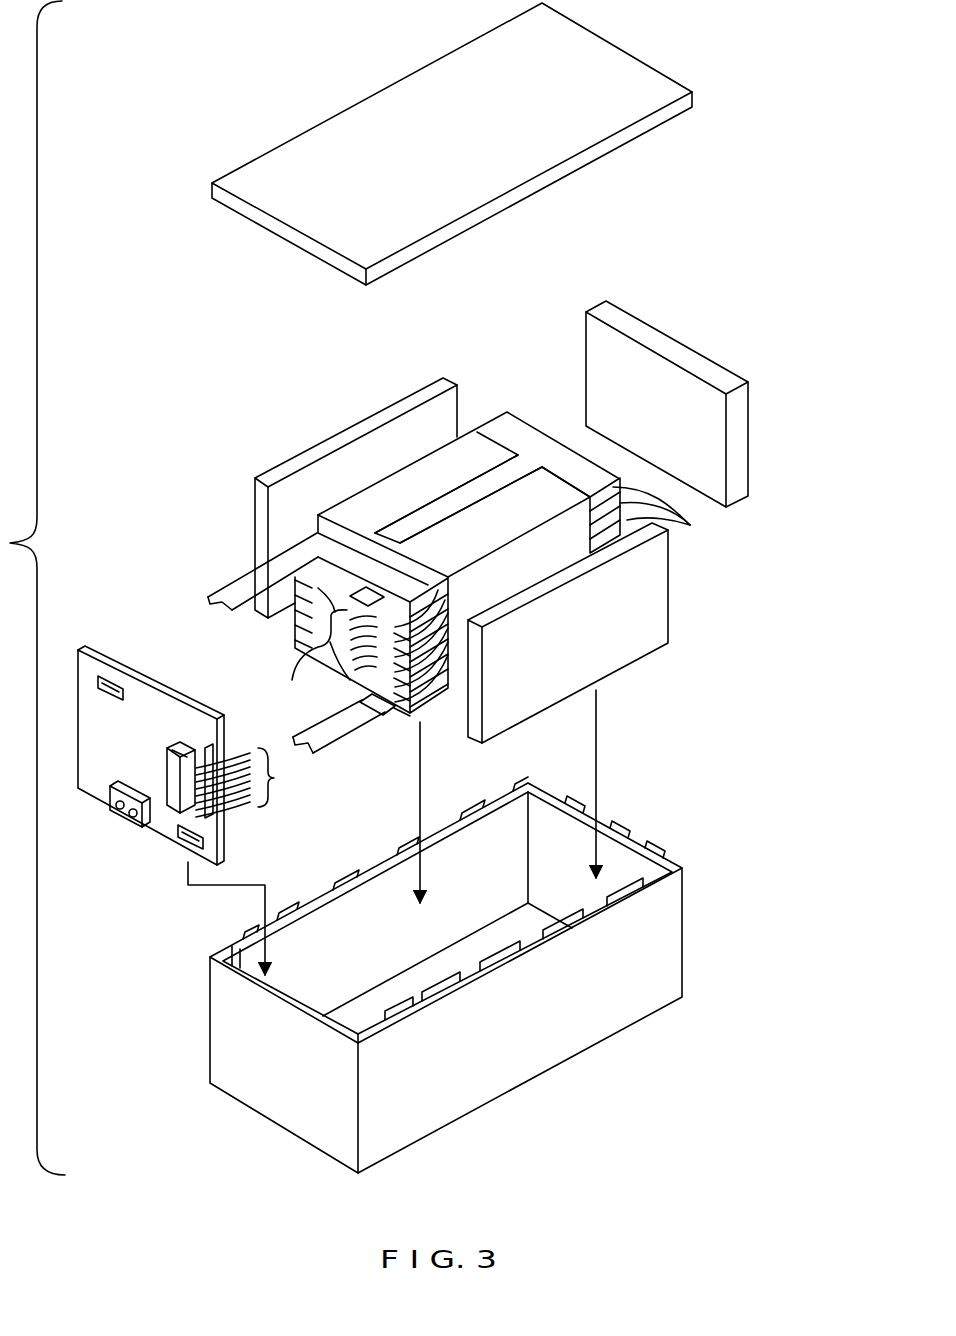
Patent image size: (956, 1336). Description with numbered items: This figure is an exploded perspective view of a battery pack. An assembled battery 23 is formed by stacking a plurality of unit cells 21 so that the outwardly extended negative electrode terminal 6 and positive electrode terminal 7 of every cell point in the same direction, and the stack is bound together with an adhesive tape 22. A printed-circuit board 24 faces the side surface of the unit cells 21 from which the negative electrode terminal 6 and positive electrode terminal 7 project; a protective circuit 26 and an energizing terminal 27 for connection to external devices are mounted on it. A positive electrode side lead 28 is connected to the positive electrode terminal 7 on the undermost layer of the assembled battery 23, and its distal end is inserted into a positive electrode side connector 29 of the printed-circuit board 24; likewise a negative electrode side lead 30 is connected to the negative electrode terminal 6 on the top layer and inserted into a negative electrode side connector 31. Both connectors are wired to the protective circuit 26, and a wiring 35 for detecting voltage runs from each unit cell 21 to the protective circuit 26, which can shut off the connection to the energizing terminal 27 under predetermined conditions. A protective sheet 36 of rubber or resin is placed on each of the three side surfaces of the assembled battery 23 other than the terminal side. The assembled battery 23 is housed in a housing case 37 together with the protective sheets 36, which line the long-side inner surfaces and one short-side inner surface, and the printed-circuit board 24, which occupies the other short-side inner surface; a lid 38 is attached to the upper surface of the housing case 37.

The negative electrode terminal 6 is at (296, 543).
The positive electrode terminal 7 is at (382, 590).
The unit cell 21 is at (670, 515).
The adhesive tape 22 is at (532, 498).
The assembled battery 23 is at (403, 466).
The printed-circuit board 24 is at (111, 646).
The protective circuit 26 is at (180, 746).
The energizing terminal 27 is at (133, 822).
The positive electrode side lead 28 is at (341, 740).
The positive electrode side connector 29 is at (212, 840).
The negative electrode side lead 30 is at (227, 588).
The negative electrode side connector 31 is at (118, 686).
The wiring for detecting voltage 35 is at (322, 702).
The protective sheet 36 is at (320, 457).
The housing case 37 is at (669, 941).
The lid 38 is at (633, 77).